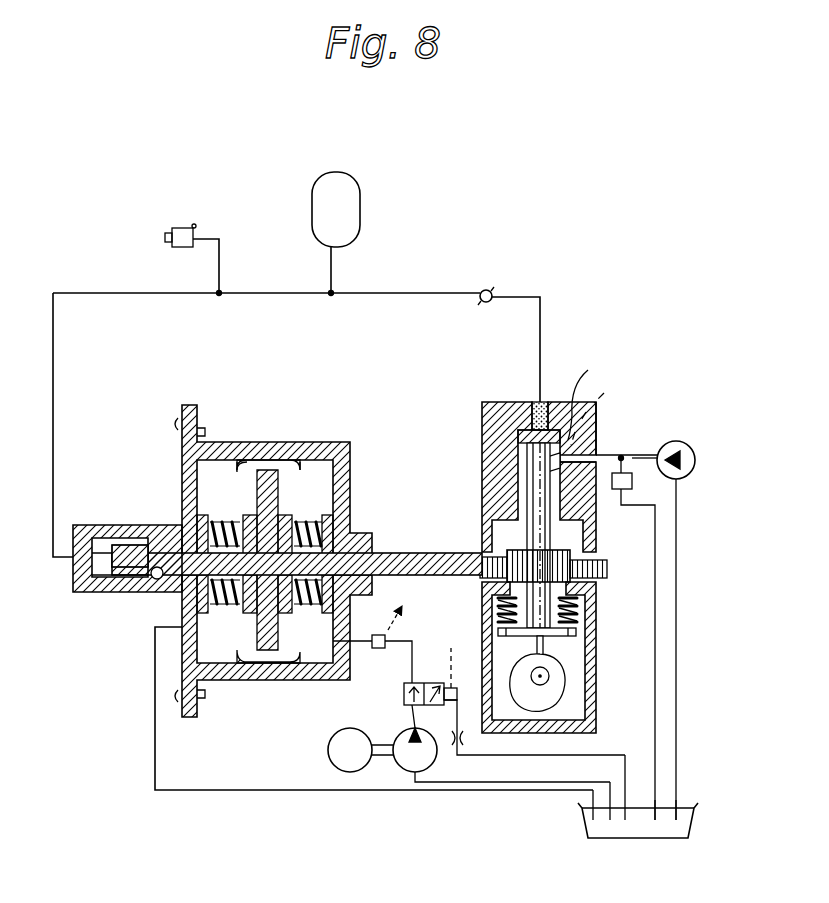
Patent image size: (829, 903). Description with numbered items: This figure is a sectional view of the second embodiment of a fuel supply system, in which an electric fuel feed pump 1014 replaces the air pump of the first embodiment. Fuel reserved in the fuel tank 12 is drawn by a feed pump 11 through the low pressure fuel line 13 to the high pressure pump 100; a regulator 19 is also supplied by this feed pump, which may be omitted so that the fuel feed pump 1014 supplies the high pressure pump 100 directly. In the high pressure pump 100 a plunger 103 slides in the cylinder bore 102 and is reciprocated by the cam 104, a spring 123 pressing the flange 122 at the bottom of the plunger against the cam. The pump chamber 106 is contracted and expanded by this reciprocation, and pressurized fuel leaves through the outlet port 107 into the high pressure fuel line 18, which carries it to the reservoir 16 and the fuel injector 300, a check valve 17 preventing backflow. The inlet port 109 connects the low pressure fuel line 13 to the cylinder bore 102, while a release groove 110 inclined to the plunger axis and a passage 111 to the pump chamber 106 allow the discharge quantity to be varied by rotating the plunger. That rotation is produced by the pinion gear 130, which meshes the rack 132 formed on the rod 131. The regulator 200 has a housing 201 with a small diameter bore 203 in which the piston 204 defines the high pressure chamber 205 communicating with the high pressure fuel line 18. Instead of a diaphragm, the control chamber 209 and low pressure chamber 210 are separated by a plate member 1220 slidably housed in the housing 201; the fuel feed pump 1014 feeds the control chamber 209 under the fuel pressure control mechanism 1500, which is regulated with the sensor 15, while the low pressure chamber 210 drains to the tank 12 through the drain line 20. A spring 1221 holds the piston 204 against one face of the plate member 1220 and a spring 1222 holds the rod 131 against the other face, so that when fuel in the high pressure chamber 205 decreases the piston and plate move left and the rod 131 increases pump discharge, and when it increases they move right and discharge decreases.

The feed pump 11 is at (686, 448).
The fuel tank 12 is at (659, 838).
The low pressure fuel line 13 is at (640, 458).
The air pressure sensor 15 is at (375, 644).
The reservoir 16 is at (362, 219).
The check valve 17 is at (492, 292).
The high pressure fuel line 18 is at (430, 294).
The regulator 19 is at (632, 484).
The drain line 20 is at (268, 790).
The high pressure pump 100 is at (477, 508).
The cylinder bore 102 is at (522, 494).
The plunger 103 is at (522, 460).
The cam 104 is at (562, 678).
The pump chamber 106 is at (595, 392).
The outlet port 107 is at (540, 402).
The inlet port 109 is at (598, 455).
The release groove 110 is at (597, 428).
The passage 111 is at (604, 407).
The flange 122 is at (580, 634).
The spring 123 is at (580, 612).
The pinion gear 130 is at (585, 556).
The rod 131 is at (460, 562).
The rack 132 is at (607, 567).
The regulator 200 is at (291, 438).
The housing 201 is at (288, 673).
The small diameter bore 203 is at (158, 594).
The piston 204 is at (172, 550).
The high pressure chamber 205 is at (106, 572).
The control chamber 209 is at (324, 442).
The low pressure chamber 210 is at (222, 651).
The fuel injector 300 is at (187, 229).
The electric fuel feed pump 1014 is at (406, 774).
The plate member 1220 is at (256, 468).
The spring 1221 is at (204, 516).
The spring 1222 is at (320, 519).
The fuel pressure control mechanism 1500 is at (404, 694).